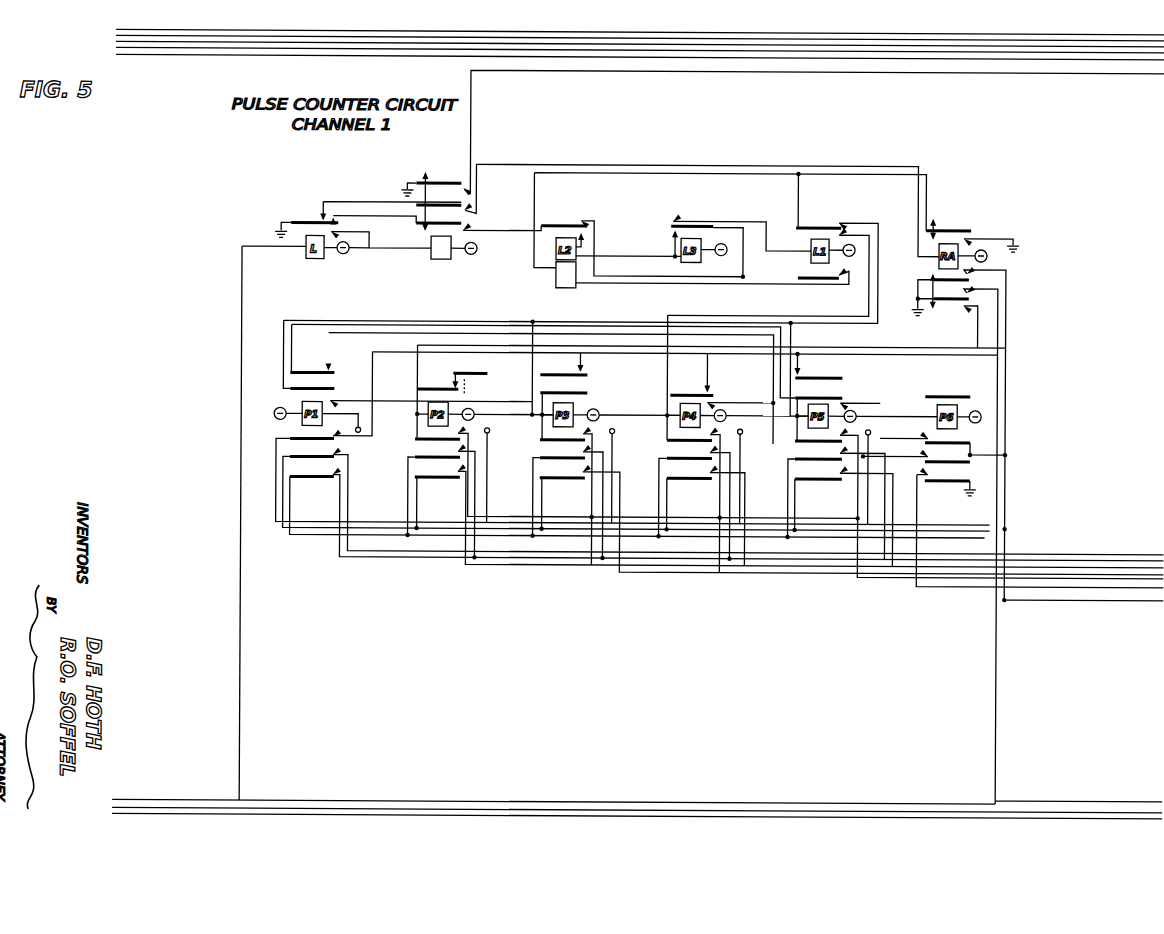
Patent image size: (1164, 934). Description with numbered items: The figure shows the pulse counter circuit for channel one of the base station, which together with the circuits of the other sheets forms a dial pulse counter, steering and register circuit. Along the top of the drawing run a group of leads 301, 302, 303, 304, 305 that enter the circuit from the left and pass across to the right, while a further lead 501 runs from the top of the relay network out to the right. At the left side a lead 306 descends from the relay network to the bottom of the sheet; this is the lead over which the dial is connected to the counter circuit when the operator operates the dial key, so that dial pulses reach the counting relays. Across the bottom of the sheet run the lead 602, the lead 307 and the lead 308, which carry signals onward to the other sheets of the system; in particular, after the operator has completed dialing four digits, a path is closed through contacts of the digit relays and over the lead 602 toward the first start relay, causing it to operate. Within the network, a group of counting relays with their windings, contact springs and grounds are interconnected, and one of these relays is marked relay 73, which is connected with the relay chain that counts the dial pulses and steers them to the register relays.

The lead 301 is at (900, 33).
The lead 302 is at (944, 39).
The lead 303 is at (986, 45).
The lead 304 is at (1032, 51).
The lead 305 is at (1076, 58).
The lead 501 is at (1119, 72).
The lead 306 is at (241, 788).
The lead 602 is at (258, 800).
The lead 307 is at (1116, 810).
The lead 308 is at (1159, 816).
The relay 73 is at (430, 262).